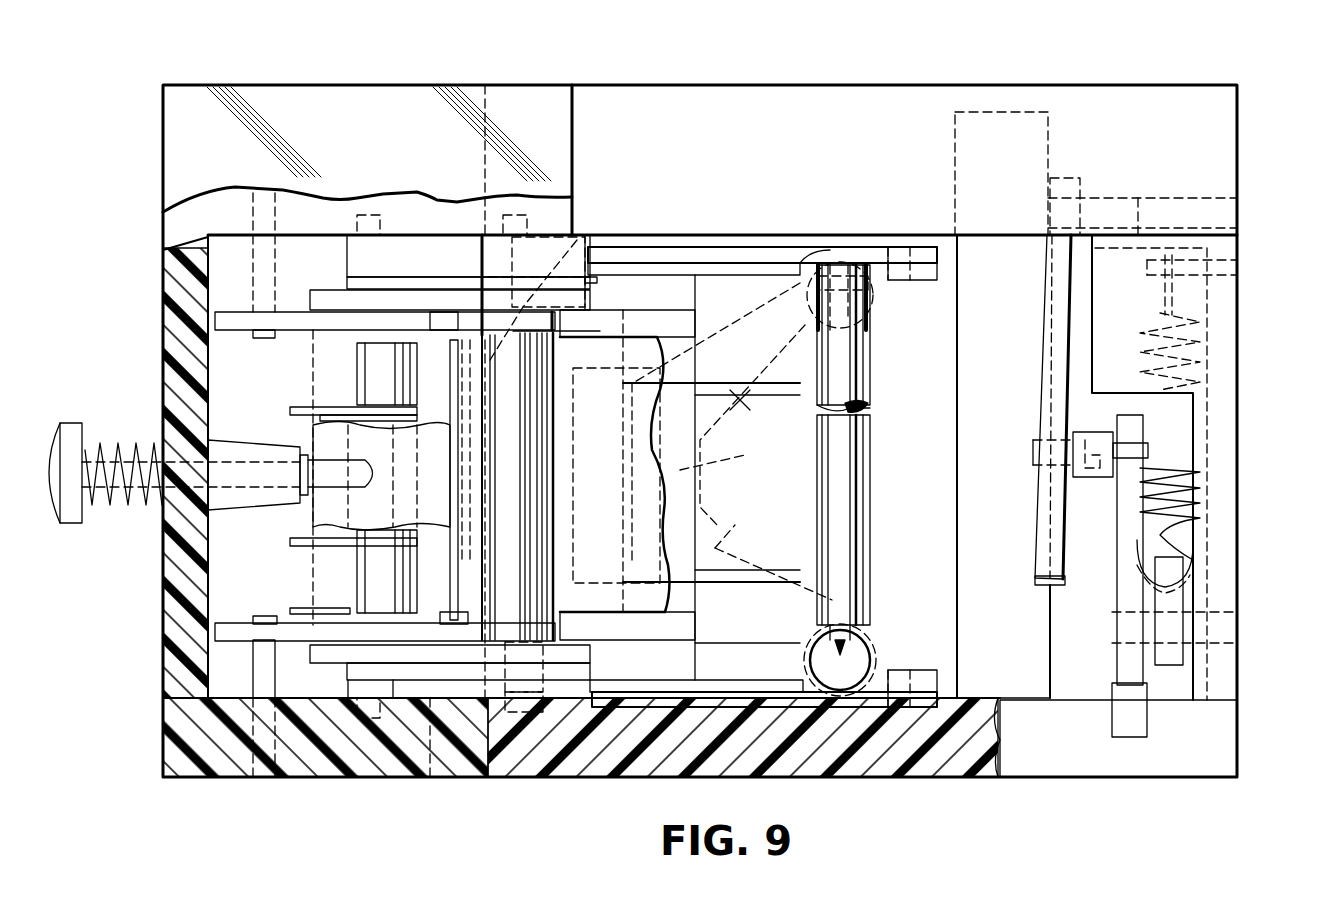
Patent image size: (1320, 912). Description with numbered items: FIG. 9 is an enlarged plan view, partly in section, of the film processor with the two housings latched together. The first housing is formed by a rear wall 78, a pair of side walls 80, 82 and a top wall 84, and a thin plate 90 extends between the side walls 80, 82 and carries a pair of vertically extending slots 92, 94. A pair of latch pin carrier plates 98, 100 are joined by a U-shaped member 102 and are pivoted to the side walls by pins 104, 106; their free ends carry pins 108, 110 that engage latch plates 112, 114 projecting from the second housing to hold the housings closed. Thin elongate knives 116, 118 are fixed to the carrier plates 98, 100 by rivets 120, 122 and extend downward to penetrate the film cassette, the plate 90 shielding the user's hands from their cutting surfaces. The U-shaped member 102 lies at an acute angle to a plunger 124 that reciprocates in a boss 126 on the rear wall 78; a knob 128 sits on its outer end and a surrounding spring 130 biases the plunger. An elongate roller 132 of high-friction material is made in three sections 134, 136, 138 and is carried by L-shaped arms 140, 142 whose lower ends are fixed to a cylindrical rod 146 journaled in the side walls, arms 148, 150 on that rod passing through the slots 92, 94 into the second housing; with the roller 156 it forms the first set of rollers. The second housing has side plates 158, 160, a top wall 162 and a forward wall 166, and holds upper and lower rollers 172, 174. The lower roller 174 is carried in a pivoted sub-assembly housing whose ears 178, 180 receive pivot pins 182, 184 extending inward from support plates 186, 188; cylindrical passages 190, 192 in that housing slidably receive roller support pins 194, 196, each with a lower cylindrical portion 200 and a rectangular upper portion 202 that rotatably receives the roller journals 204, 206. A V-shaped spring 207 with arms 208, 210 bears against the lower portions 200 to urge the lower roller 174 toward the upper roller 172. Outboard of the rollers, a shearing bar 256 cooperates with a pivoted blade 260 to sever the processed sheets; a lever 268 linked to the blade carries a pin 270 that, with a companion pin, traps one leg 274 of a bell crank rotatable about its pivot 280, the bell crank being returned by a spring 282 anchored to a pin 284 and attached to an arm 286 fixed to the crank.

The rear wall 78 is at (163, 300).
The side wall 80 is at (318, 778).
The side wall 82 is at (418, 85).
The top wall 84 is at (367, 160).
The thin plate 90 is at (480, 448).
The vertically extending slot 92 is at (505, 700).
The vertically extending slot 94 is at (500, 272).
The latch pin carrier plate 98 is at (292, 642).
The latch pin carrier plate 100 is at (300, 330).
The U-shaped member 102 is at (381, 476).
The pin 104 is at (262, 667).
The pin 106 is at (275, 290).
The pin 108 is at (563, 700).
The pin 110 is at (577, 240).
The latch plate 112 is at (565, 648).
The latch plate 114 is at (405, 290).
The knife 116 is at (415, 698).
The knife 118 is at (430, 345).
The rivet 120 is at (455, 612).
The rivet 122 is at (460, 360).
The plunger 124 is at (360, 480).
The boss 126 is at (268, 510).
The knob 128 is at (48, 445).
The spring 130 is at (128, 445).
The elongate roller 132 is at (278, 578).
The roller section 134 is at (360, 580).
The roller section 136 is at (355, 408).
The roller section 138 is at (357, 365).
The L-shaped arm 140 is at (330, 546).
The L-shaped arm 142 is at (330, 418).
The cylindrical rod 146 is at (350, 612).
The arm 148 is at (432, 700).
The arm 150 is at (463, 280).
The roller 156 is at (566, 515).
The side plate 158 is at (965, 777).
The side plate 160 is at (995, 85).
The top wall 162 is at (722, 160).
The forward wall 166 is at (1237, 285).
The upper roller 172 is at (860, 382).
The bottom roller 174 is at (860, 515).
The ear 178 is at (937, 672).
The ear 180 is at (918, 280).
The pivot pin 182 is at (898, 672).
The pivot pin 184 is at (897, 282).
The support plate 186 is at (792, 700).
The support plate 188 is at (735, 255).
The cylindrical passage 190 is at (830, 648).
The cylindrical passage 192 is at (812, 322).
The bottom roller support pin 194 is at (863, 628).
The bottom roller support pin 196 is at (843, 284).
The lower cylindrical portion 200 is at (807, 299).
The upper portion 202 is at (815, 283).
The journal 204 is at (828, 638).
The journal 206 is at (830, 248).
The V-shaped spring 207 is at (742, 426).
The arm 208 is at (720, 535).
The arm 210 is at (742, 402).
The shearing bar 256 is at (1042, 628).
The blade 260 is at (1056, 350).
The lever 268 is at (1080, 440).
The pin 270 is at (1150, 455).
The leg 274 is at (1130, 430).
The pivot 280 is at (1215, 625).
The spring 282 is at (1190, 485).
The pin 284 is at (1232, 263).
The arm 286 is at (1170, 590).